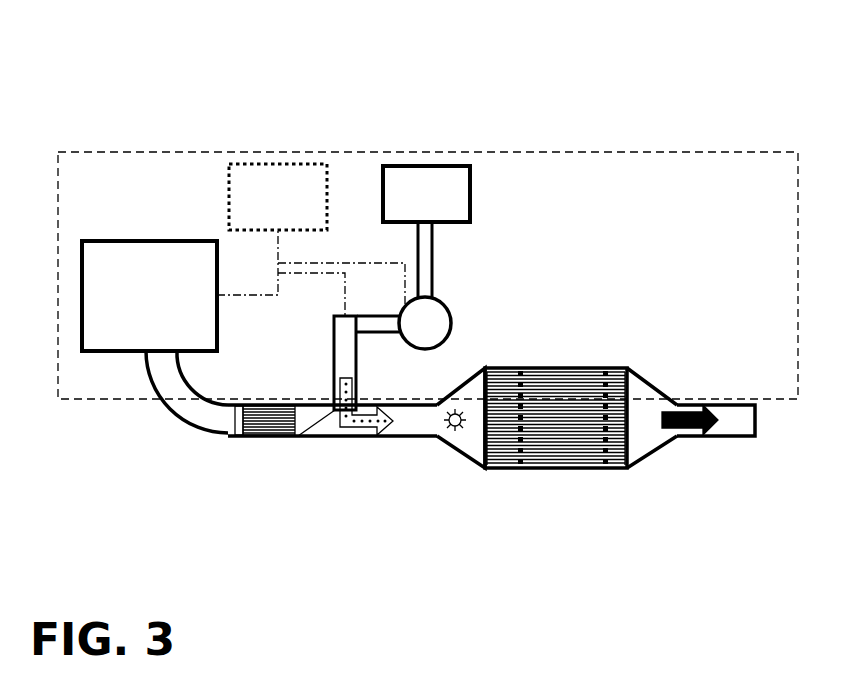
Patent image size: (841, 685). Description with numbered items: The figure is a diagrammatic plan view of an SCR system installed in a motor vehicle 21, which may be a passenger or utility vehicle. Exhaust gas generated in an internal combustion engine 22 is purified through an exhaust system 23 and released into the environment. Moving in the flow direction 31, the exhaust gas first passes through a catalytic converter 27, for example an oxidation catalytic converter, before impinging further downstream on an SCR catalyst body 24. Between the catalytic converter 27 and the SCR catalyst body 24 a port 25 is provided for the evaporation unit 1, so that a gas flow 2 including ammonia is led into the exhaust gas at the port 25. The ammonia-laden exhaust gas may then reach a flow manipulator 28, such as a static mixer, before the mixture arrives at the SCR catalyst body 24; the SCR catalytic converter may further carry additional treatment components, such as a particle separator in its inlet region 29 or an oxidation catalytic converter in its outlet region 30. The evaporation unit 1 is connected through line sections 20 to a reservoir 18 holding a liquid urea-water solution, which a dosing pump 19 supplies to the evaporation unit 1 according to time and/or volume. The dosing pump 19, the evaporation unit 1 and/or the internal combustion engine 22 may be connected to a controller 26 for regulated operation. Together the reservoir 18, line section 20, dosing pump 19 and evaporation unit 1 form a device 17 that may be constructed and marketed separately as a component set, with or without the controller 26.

The evaporation unit 1 is at (333, 345).
The gas flow 2 is at (365, 425).
The device 17 is at (395, 142).
The reservoir 18 is at (470, 185).
The dosing pump 19 is at (450, 320).
The line sections 20 is at (432, 266).
The motor vehicle 21 is at (699, 151).
The internal combustion engine 22 is at (160, 262).
The exhaust system 23 is at (172, 388).
The SCR catalyst body 24 is at (555, 455).
The port 25 is at (298, 436).
The controller 26 is at (283, 180).
The catalytic converter 27 is at (237, 430).
The flow manipulator 28 is at (455, 432).
The inlet region 29 is at (503, 455).
The outlet region 30 is at (613, 455).
The flow direction 31 is at (690, 430).